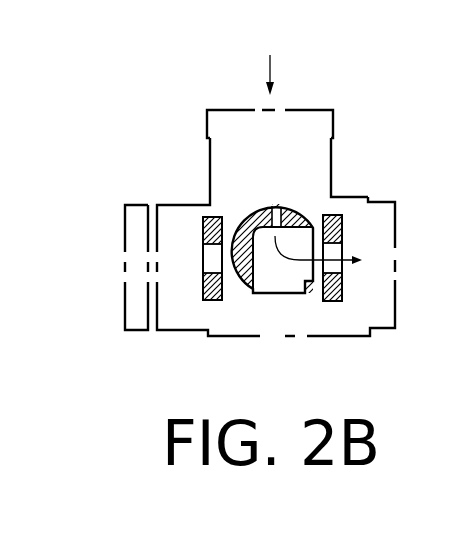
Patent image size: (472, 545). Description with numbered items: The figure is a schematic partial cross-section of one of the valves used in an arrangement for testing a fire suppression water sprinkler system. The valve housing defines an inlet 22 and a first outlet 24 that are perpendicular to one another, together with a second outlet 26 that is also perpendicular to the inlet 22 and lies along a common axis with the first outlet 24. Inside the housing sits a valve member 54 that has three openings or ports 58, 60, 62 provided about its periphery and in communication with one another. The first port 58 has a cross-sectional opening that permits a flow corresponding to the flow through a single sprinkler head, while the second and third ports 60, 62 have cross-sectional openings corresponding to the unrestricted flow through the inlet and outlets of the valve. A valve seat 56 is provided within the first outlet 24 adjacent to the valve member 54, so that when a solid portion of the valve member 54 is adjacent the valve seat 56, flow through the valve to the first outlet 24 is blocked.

The inlet 22 is at (298, 110).
The first outlet 24 is at (125, 288).
The second outlet 26 is at (395, 227).
The valve member 54 is at (304, 213).
The valve seat 56 is at (213, 302).
The first opening or port 58 is at (275, 206).
The second opening or port 60 is at (343, 265).
The third opening or port 62 is at (267, 294).